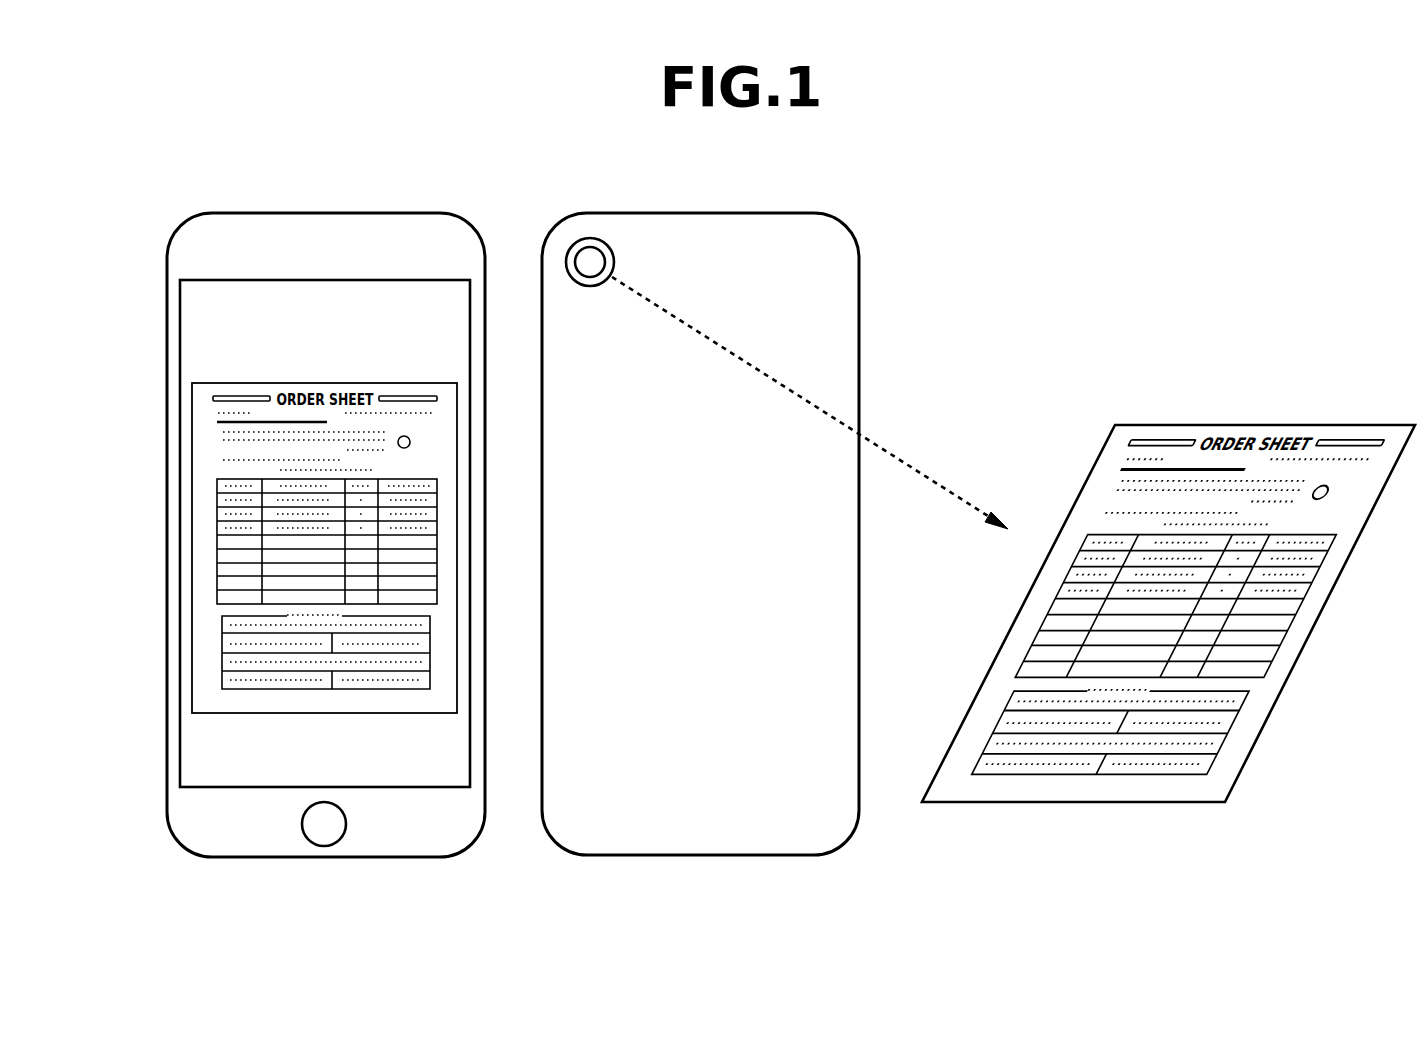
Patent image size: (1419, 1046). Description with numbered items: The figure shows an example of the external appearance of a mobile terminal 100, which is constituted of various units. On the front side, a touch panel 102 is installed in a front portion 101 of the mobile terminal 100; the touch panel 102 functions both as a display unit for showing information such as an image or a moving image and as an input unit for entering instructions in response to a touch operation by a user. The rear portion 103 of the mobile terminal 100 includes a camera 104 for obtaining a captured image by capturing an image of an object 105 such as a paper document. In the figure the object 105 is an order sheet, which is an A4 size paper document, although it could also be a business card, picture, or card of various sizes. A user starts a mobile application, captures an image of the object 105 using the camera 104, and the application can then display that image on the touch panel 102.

The mobile terminal 100 is at (284, 508).
The front portion 101 is at (167, 283).
The touch panel 102 is at (200, 342).
The rear portion 103 is at (700, 508).
The camera 104 is at (591, 238).
The object 105 is at (1252, 425).